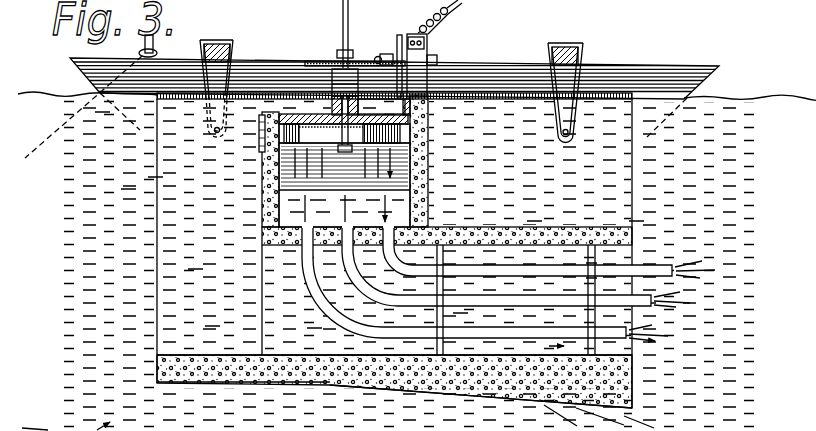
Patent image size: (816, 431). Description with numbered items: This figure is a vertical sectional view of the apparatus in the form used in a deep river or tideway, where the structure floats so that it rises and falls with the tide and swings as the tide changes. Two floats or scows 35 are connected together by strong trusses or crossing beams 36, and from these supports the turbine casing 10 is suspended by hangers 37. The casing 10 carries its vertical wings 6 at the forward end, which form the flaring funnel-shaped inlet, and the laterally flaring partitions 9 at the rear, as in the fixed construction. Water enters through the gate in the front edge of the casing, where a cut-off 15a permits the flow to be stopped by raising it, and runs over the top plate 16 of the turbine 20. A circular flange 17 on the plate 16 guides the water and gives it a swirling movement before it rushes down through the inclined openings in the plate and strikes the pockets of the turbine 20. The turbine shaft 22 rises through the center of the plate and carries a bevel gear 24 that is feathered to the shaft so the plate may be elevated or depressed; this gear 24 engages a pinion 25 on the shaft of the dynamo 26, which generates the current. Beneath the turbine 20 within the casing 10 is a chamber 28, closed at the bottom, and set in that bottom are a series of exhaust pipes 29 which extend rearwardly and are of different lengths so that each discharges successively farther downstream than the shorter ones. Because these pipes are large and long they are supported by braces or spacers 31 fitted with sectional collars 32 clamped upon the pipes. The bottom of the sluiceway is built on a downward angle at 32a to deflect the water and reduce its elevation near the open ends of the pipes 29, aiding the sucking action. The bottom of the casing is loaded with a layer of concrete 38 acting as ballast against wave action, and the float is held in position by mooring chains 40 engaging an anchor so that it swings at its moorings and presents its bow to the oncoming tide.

The vertical wings 6 is at (210, 227).
The laterally flaring partitions 9 is at (530, 163).
The turbine casing 10 is at (268, 207).
The cut-off 15a is at (259, 147).
The top plate 16 is at (384, 96).
The circular flange 17 is at (412, 103).
The turbine 20 is at (430, 135).
The shaft 22 is at (324, 92).
The bevel gear 24 is at (330, 61).
The pinion 25 is at (377, 54).
The dynamo 26 is at (425, 52).
The chamber 28 is at (402, 175).
The exhaust pipes 29 is at (512, 270).
The braces or spacers 31 is at (588, 319).
The sectional collars 32 is at (593, 272).
The downward angle of sluiceway bottom 32a is at (632, 396).
The floats or scows 35 is at (492, 78).
The trusses or crossing beams 36 is at (232, 41).
The hangers 37 is at (240, 75).
The layer of concrete 38 is at (367, 378).
The mooring chains 40 is at (62, 124).